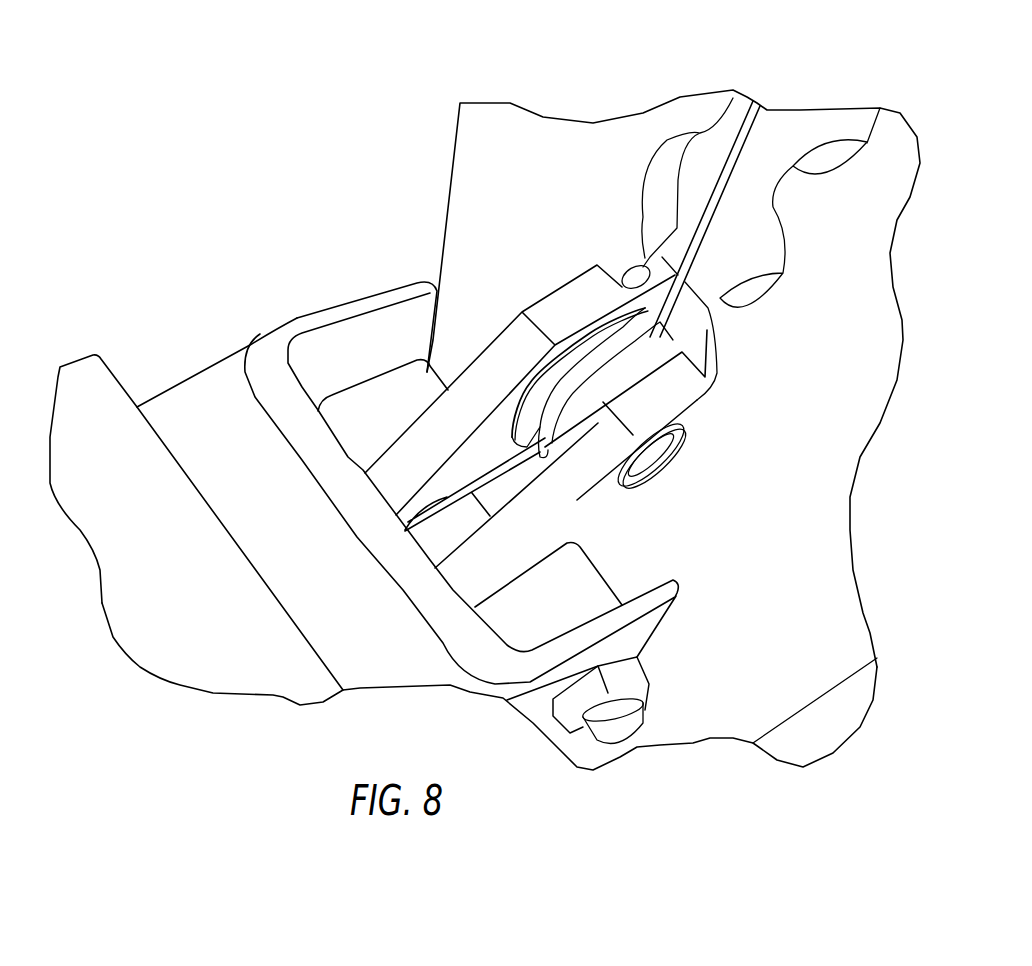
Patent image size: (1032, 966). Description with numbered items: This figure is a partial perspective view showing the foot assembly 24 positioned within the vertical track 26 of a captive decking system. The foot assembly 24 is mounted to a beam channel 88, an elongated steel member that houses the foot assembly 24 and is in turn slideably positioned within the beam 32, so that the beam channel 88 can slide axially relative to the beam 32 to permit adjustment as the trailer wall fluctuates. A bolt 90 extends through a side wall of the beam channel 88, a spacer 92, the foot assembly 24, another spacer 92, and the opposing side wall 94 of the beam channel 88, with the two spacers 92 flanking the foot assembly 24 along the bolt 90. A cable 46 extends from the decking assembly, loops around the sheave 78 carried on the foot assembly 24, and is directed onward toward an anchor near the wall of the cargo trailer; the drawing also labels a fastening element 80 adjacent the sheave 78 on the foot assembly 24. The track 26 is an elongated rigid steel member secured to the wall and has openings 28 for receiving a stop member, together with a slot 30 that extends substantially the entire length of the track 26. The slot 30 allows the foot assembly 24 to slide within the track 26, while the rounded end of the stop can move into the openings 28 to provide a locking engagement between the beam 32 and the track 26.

The foot assembly 24 is at (507, 320).
The track 26 is at (832, 418).
The openings 28 is at (663, 170).
The slot 30 is at (788, 138).
The beam 32 is at (83, 382).
The cable 46 is at (742, 138).
The sheave 78 is at (623, 333).
The fastener 80 is at (657, 457).
The beam channel 88 is at (199, 403).
The bolt 90 is at (618, 733).
The spacer 92 is at (382, 405).
The opposing side wall 94 is at (298, 330).